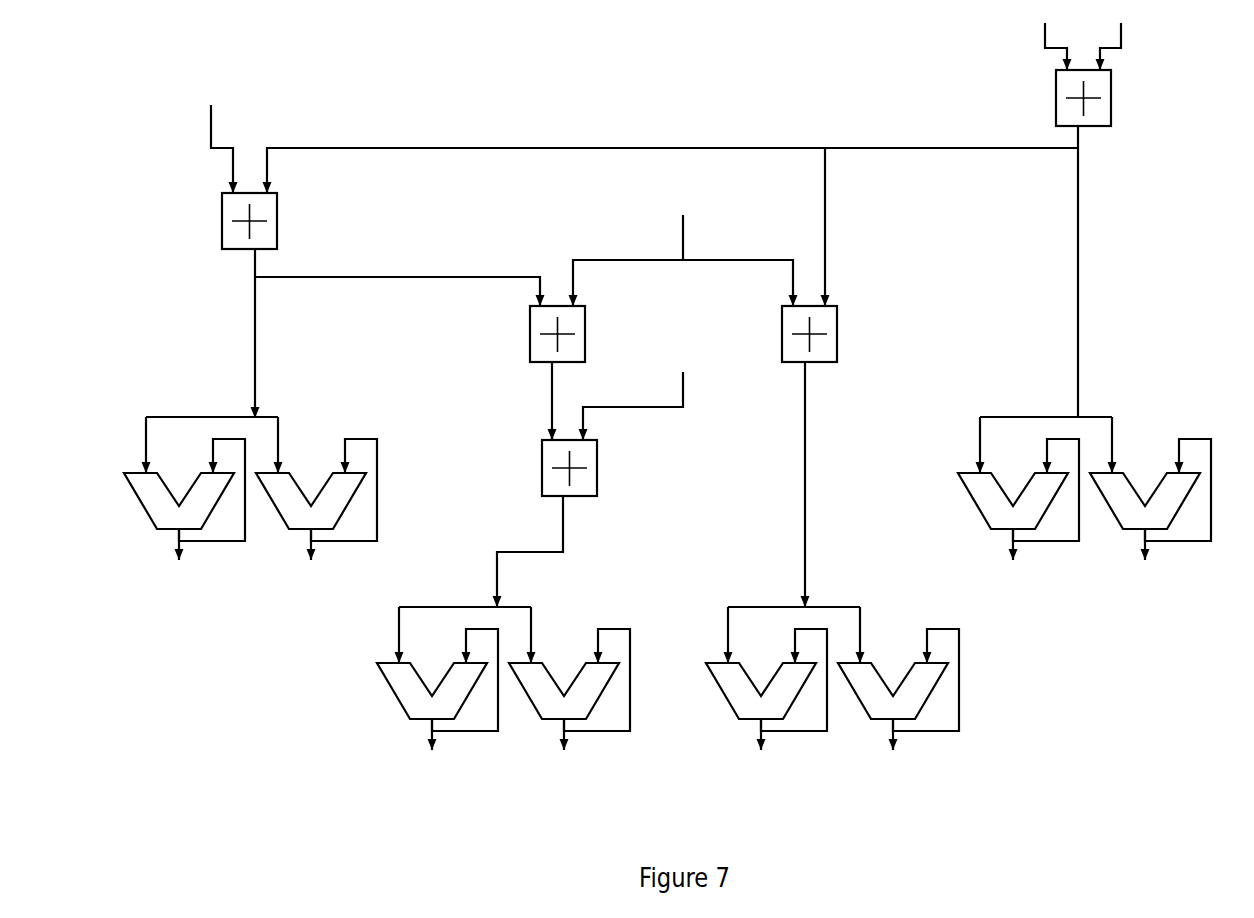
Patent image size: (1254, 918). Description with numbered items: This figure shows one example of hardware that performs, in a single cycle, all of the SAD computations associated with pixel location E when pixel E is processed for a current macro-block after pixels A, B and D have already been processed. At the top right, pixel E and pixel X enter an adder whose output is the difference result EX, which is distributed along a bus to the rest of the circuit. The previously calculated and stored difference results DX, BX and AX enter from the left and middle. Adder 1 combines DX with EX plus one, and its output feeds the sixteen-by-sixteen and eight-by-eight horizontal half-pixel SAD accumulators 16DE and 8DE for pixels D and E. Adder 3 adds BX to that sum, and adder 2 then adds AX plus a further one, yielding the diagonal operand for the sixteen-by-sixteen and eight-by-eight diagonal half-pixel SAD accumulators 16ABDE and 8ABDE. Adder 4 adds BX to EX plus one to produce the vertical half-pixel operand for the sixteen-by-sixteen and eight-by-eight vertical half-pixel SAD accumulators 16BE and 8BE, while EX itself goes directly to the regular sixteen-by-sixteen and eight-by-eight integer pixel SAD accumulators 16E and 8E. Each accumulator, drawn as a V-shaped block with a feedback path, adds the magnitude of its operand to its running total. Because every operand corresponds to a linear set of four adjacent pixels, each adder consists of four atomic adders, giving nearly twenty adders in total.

The difference result (D-X) DX is at (214, 133).
The difference result (E-X) EX is at (692, 271).
The pixel location E is at (1047, 46).
The pixel X is at (1123, 46).
The difference result (B-X) BX is at (683, 246).
The difference result (A-X) AX is at (638, 391).
The adder 1 is at (383, 305).
The adder 3 is at (501, 373).
The adder 4 is at (867, 456).
The adder 2 is at (603, 523).
The 16×16 horizontal half-pixel SAD accumulator (SAD16_DE) 16DE is at (184, 504).
The 8×8 horizontal half-pixel SAD accumulator (SAD8_DE) 8DE is at (316, 504).
The 16×16 diagonal half-pixel SAD accumulator (SAD16_ABDE) 16ABDE is at (437, 695).
The 8×8 diagonal half-pixel SAD accumulator (SAD8_ABDE) 8ABDE is at (569, 695).
The 16×16 integer pixel SAD accumulator (SAD16_E) 16E is at (1018, 504).
The 8×8 integer pixel SAD accumulator (SAD8_E) 8E is at (1150, 504).
The 16×16 vertical half-pixel SAD accumulator (SAD16_BE) 16BE is at (766, 695).
The 8×8 vertical half-pixel SAD accumulator (SAD8_BE) 8BE is at (898, 695).